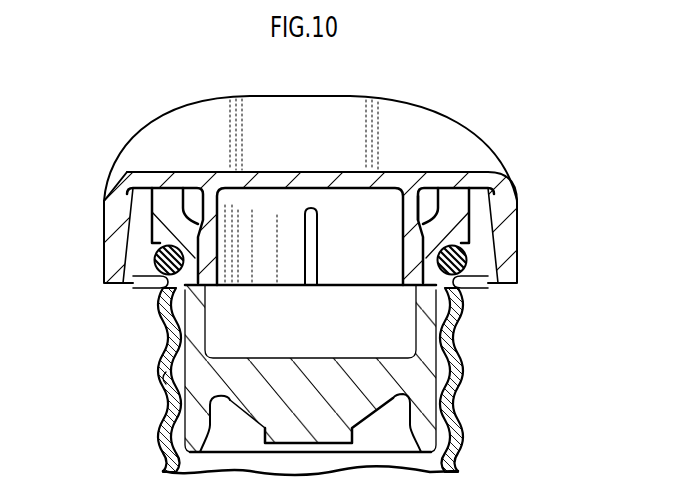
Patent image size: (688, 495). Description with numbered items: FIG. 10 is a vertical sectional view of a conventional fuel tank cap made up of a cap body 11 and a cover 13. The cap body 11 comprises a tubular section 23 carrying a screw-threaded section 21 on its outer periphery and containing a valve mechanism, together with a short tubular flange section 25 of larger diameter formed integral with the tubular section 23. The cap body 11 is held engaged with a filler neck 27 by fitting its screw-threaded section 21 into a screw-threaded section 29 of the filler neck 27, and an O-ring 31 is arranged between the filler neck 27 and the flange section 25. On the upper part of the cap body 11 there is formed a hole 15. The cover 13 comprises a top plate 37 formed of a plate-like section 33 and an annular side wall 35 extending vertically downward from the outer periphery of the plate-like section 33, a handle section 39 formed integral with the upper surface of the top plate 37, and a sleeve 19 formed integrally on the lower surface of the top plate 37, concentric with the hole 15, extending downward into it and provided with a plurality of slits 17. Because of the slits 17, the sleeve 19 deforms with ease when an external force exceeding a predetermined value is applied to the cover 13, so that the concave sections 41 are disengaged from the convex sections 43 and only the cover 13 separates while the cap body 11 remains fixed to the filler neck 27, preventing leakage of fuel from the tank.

The cap body 11 is at (471, 258).
The cover 13 is at (106, 188).
The hole 15 is at (213, 323).
The slits 17 is at (312, 276).
The sleeve 19 is at (222, 250).
The screw-threaded section 21 is at (457, 352).
The tubular section 23 is at (432, 408).
The flange section 25 is at (458, 213).
The filler neck 27 is at (160, 342).
The screw-threaded section 29 is at (162, 377).
The O-ring 31 is at (154, 258).
The plate-like section 33 is at (282, 172).
The annular side wall 35 is at (118, 206).
The top plate 37 is at (479, 169).
The handle section 39 is at (443, 112).
The concave sections 41 is at (440, 307).
The convex sections 43 is at (428, 213).